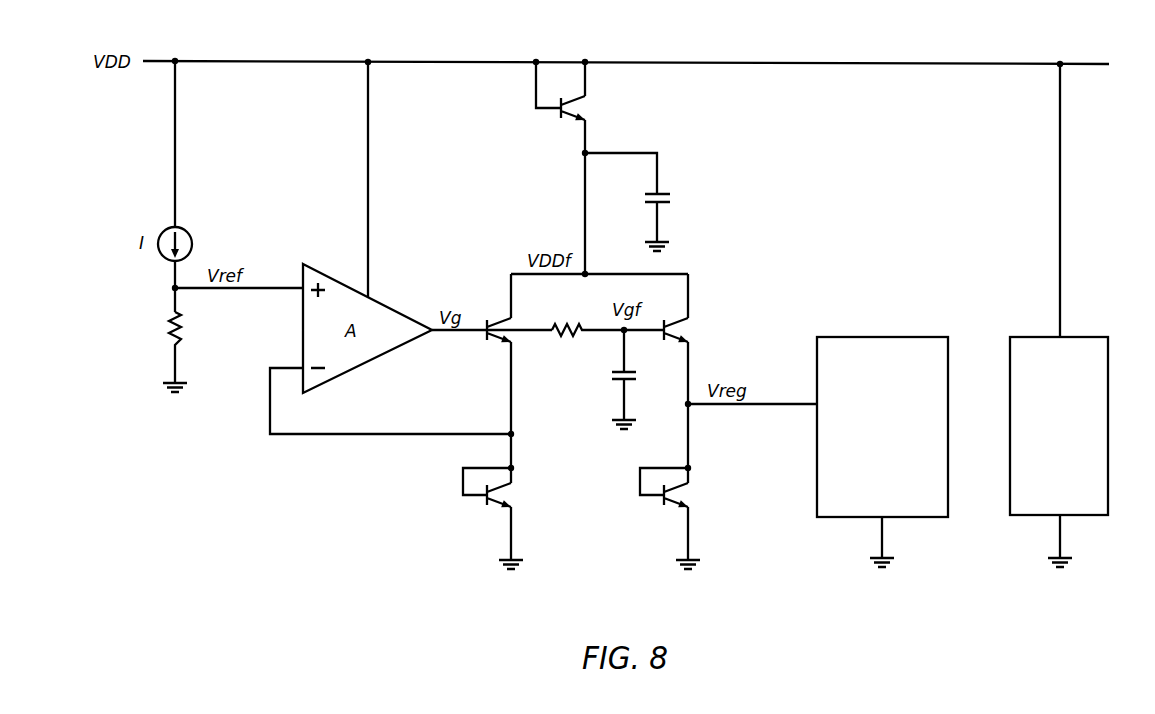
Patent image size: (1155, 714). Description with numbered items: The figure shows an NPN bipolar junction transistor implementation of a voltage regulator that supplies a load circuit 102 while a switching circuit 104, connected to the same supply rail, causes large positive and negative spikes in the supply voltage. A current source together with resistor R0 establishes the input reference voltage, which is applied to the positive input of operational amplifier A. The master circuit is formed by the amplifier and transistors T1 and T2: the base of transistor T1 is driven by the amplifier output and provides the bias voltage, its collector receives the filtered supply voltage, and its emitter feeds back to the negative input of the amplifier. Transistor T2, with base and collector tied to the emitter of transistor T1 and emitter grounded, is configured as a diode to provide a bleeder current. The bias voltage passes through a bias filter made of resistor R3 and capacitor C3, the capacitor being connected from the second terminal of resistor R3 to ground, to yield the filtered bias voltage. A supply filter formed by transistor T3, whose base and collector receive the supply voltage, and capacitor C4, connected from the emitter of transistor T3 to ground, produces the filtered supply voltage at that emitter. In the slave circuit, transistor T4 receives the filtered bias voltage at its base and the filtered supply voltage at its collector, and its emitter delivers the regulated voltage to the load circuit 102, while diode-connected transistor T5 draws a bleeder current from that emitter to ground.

The load circuit 102 is at (882, 452).
The switching circuit 104 is at (1059, 315).
The transistor T1 is at (494, 371).
The transistor T2 is at (502, 517).
The transistor T3 is at (573, 168).
The transistor T4 is at (692, 371).
The transistor T5 is at (680, 517).
The resistor R0 is at (162, 352).
The resistor R3 is at (608, 317).
The capacitor C3 is at (610, 379).
The capacitor C4 is at (627, 202).